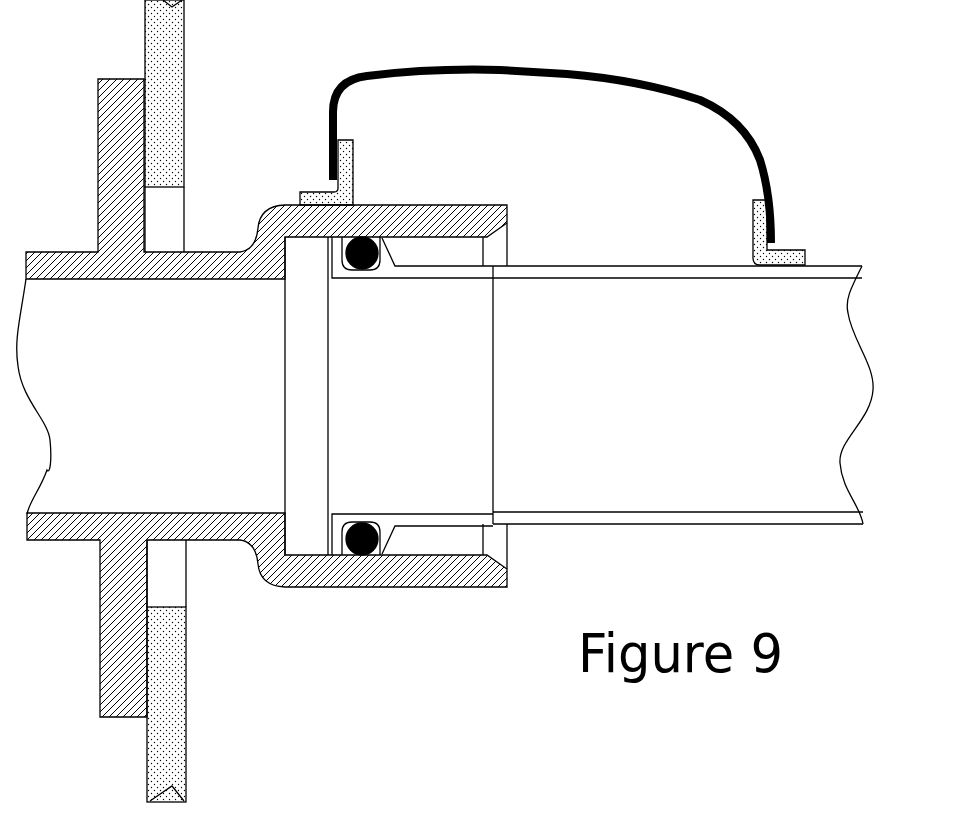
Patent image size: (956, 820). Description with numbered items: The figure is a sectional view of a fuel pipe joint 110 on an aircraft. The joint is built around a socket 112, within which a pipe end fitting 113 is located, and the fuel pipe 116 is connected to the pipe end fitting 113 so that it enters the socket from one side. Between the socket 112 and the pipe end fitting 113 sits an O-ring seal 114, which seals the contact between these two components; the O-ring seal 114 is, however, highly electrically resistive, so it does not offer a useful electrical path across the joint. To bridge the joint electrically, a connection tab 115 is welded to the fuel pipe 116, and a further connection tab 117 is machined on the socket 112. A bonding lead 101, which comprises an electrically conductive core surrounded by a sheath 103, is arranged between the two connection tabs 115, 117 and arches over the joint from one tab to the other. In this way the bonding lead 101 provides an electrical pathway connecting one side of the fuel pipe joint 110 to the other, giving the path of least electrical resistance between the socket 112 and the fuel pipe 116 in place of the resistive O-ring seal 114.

The bonding lead 101 is at (537, 68).
The sheath 103 is at (785, 19).
The fuel pipe joint 110 is at (283, 142).
The socket 112 is at (433, 205).
The pipe end fitting 113 is at (438, 263).
The O-ring seal 114 is at (377, 522).
The connection tab 115 is at (758, 237).
The fuel pipe 116 is at (658, 518).
The further connection tab 117 is at (348, 190).